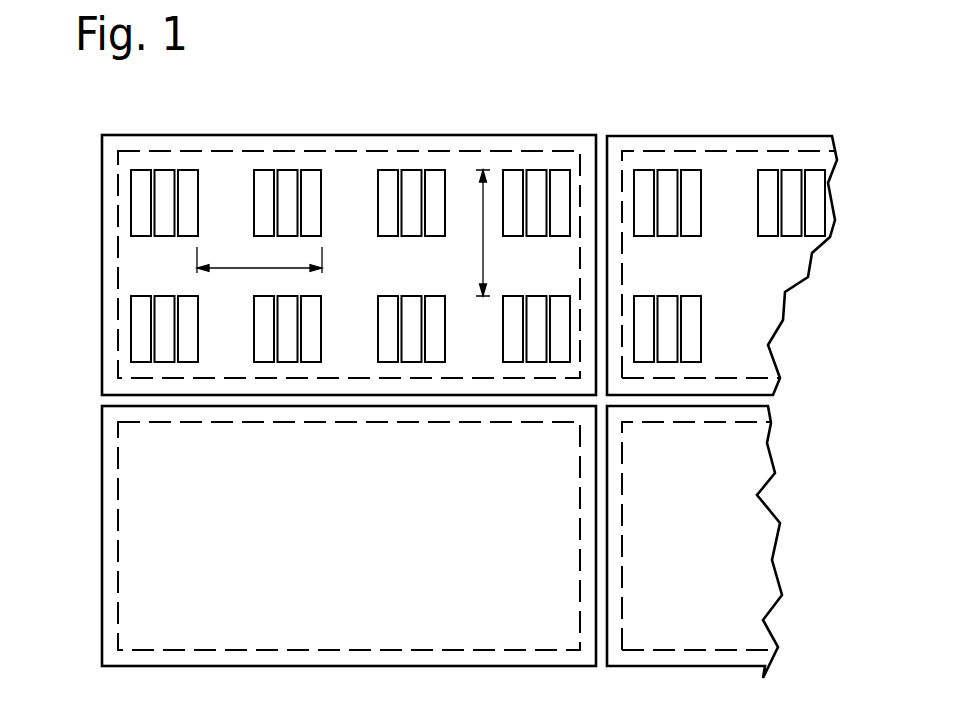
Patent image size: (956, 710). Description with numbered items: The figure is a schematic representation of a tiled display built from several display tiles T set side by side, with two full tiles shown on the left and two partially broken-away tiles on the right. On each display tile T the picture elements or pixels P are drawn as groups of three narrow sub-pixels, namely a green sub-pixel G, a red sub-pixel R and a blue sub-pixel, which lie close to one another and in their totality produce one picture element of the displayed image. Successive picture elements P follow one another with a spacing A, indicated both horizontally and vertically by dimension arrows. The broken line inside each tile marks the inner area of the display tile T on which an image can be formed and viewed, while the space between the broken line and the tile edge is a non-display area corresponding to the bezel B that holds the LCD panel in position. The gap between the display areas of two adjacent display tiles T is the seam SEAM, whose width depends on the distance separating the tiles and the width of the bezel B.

The display tile T is at (357, 170).
The bezel B is at (475, 145).
The seam SEAM is at (600, 140).
The picture element P is at (203, 120).
The spacing A is at (343, 233).
The green sub-pixel G is at (141, 203).
The red sub-pixel R is at (165, 203).